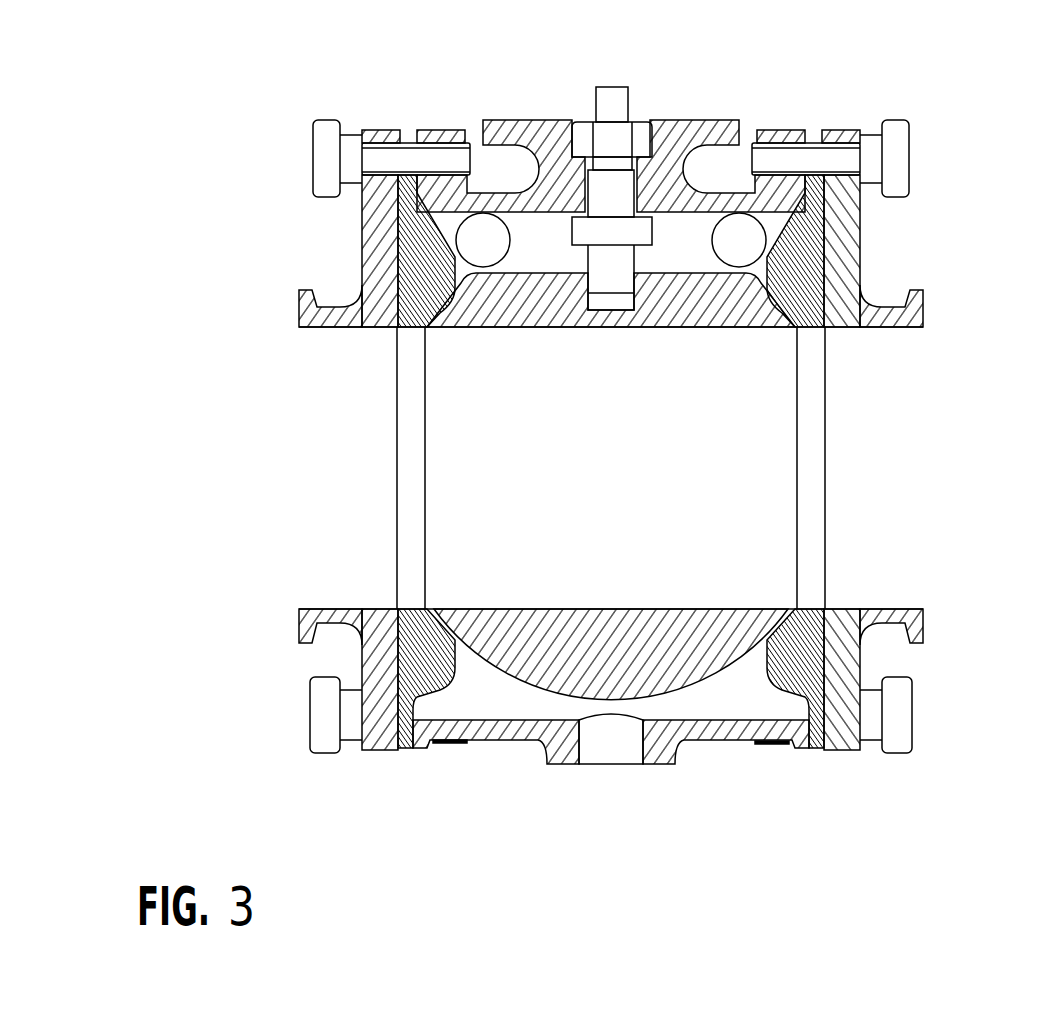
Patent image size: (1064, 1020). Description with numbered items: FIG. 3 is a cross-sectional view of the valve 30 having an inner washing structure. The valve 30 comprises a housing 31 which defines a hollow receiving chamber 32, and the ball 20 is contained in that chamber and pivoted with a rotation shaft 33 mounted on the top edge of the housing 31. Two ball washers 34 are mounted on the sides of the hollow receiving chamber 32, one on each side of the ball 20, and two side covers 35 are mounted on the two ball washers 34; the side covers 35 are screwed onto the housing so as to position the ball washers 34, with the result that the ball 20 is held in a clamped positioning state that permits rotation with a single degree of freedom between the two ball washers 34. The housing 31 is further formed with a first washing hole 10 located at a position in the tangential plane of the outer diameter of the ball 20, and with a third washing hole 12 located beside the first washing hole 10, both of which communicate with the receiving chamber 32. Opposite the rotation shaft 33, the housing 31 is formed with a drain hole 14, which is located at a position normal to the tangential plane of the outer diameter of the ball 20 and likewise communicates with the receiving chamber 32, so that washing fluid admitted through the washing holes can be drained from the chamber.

The first washing hole 10 is at (492, 228).
The third washing hole 12 is at (758, 226).
The drain hole 14 is at (640, 743).
The ball 20 is at (747, 313).
The valve 30 is at (966, 192).
The housing 31 is at (743, 740).
The hollow receiving chamber 32 is at (528, 720).
The rotation shaft 33 is at (610, 102).
The ball washer 34 is at (396, 605).
The side cover 35 is at (368, 611).